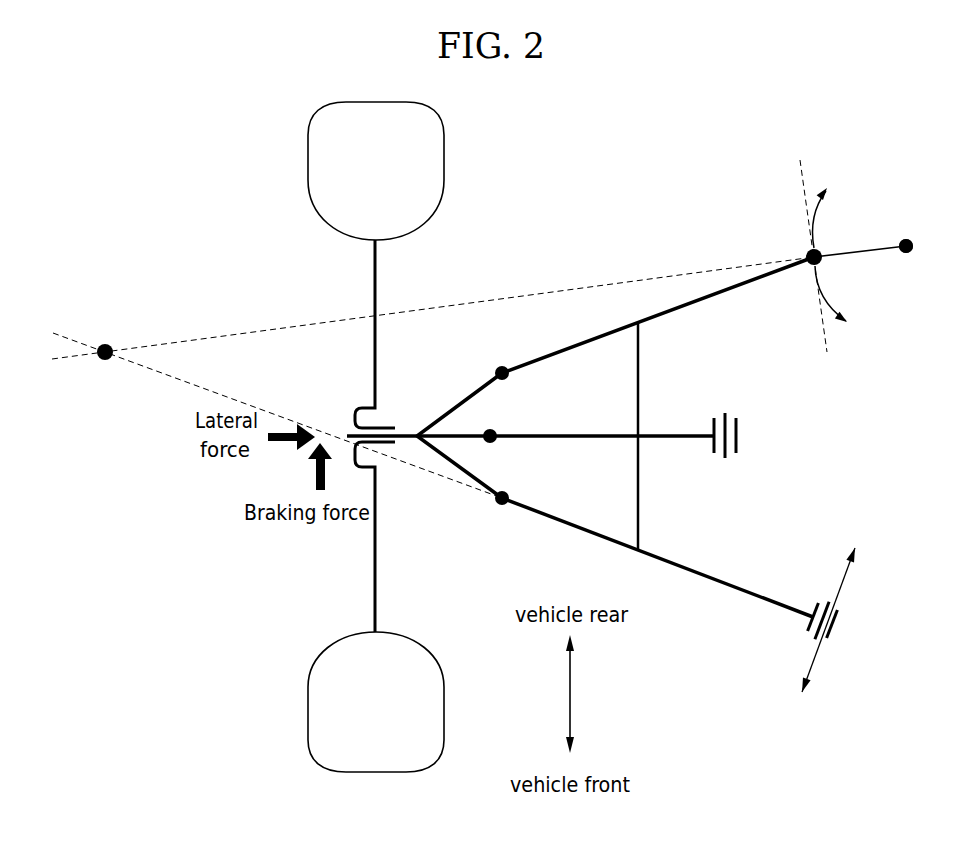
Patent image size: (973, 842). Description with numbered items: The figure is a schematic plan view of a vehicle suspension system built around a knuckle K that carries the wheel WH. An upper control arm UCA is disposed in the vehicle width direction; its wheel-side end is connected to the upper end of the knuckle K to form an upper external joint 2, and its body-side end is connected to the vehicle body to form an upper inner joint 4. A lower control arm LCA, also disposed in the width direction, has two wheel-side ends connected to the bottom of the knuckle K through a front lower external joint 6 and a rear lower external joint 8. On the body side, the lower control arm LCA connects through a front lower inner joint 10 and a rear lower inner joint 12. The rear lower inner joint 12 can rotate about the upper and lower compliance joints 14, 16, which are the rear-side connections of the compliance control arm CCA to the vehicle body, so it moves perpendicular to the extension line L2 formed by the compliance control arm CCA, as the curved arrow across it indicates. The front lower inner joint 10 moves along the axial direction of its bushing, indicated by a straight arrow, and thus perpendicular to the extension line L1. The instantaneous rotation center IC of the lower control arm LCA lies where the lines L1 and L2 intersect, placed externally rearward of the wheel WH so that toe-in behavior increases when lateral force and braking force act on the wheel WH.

The upper external joint 2 is at (494, 443).
The upper inner joint 4 is at (740, 436).
The front lower external joint 6 is at (502, 506).
The rear lower external joint 8 is at (502, 366).
The front lower inner joint 10 is at (838, 624).
The rear lower inner joint 12 is at (806, 252).
The upper compliance joint 14 is at (908, 238).
The lower compliance joint 16 is at (906, 246).
The knuckle K is at (452, 408).
The upper control arm UCA is at (568, 434).
The lower control arm LCA is at (700, 300).
The compliance control arm CCA is at (863, 255).
The wheel WH is at (308, 712).
The instantaneous rotation center IC is at (108, 342).
The extension line L1 is at (155, 368).
The extension line L2 is at (208, 334).